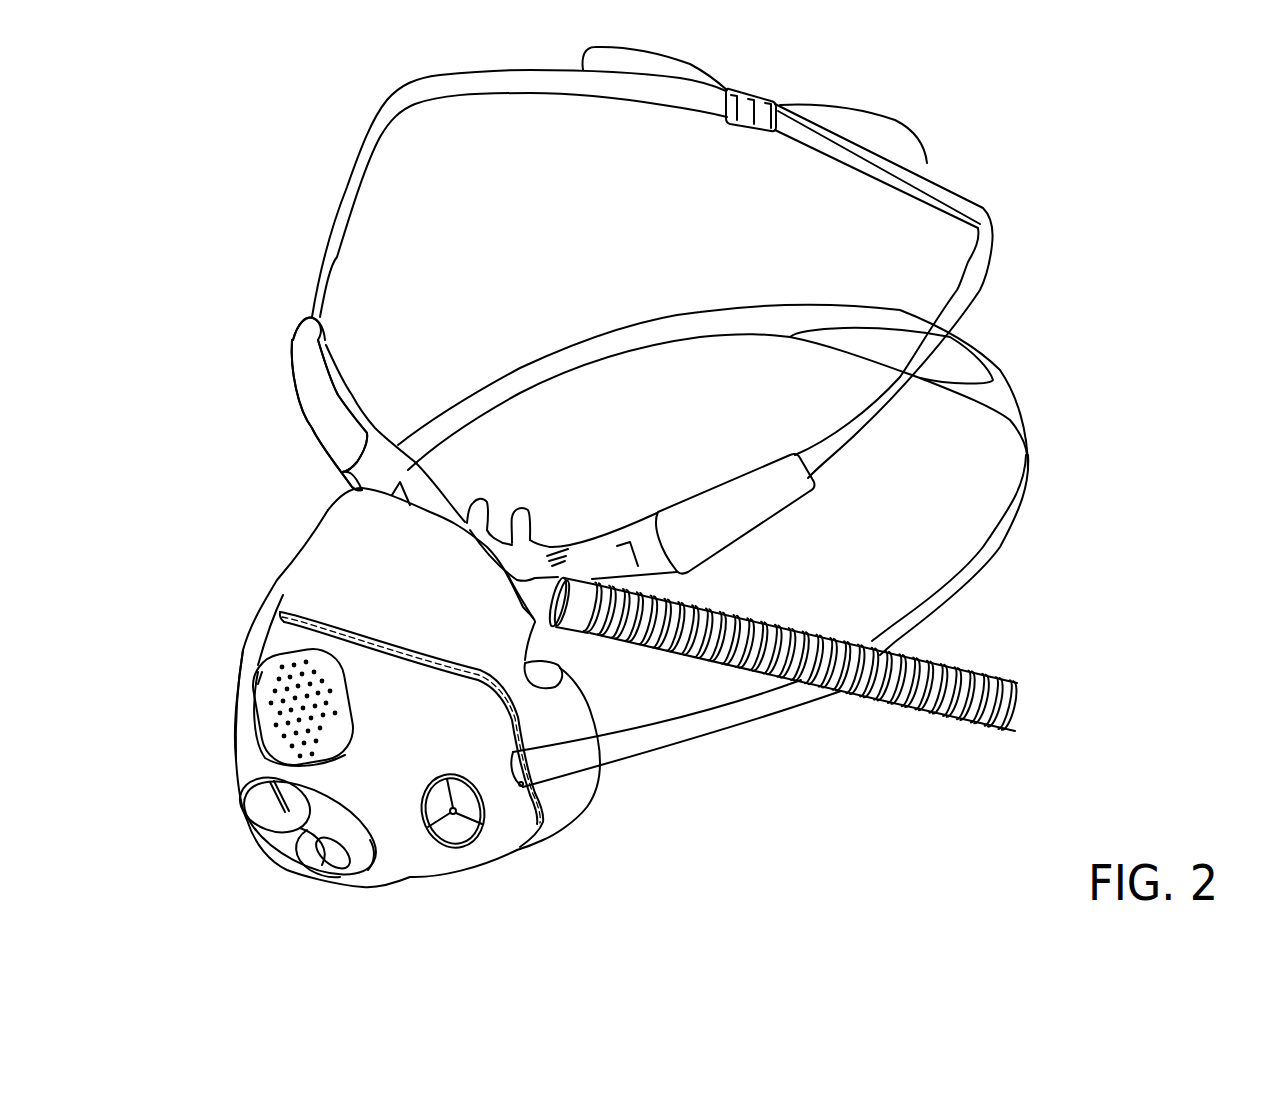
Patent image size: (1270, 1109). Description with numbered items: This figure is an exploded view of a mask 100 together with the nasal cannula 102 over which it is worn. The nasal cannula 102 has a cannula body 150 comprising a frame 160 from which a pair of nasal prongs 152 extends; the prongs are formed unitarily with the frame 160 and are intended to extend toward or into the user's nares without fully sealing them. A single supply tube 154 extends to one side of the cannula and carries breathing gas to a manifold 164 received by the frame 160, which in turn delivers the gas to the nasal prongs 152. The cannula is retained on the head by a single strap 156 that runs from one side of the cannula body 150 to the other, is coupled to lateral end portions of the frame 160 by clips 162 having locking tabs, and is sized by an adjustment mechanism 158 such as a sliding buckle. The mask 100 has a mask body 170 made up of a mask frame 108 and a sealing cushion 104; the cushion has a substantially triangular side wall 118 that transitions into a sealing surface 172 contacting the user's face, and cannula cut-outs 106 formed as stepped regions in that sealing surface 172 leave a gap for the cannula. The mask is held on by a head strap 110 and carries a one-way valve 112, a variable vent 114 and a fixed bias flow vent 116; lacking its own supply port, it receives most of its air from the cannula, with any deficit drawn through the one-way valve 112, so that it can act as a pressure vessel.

The mask 100 is at (255, 588).
The nasal cannula 102 is at (280, 388).
The sealing cushion 104 is at (597, 793).
The cannula cut-outs 106 is at (665, 668).
The mask frame 108 is at (244, 748).
The head strap 110 is at (972, 593).
The one-way valve 112 is at (469, 833).
The variable vent 114 is at (283, 837).
The fixed bias flow vent 116 is at (293, 726).
The side wall 118 is at (570, 708).
The cannula body 150 is at (571, 502).
The nasal prongs 152 is at (493, 500).
The supply tube 154 is at (770, 628).
The strap 156 is at (988, 185).
The adjustment mechanism 158 is at (771, 84).
The frame 160 is at (651, 514).
The clip 162 is at (327, 364).
The manifold 164 is at (545, 620).
The mask body 170 is at (245, 622).
The sealing surface 172 is at (598, 737).